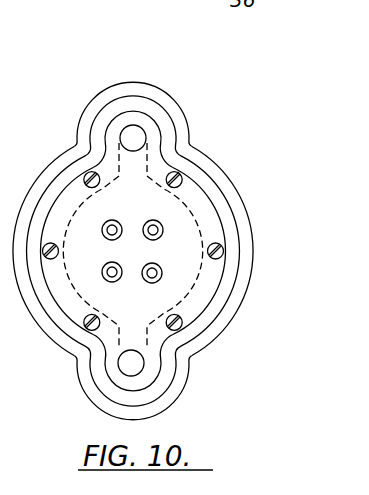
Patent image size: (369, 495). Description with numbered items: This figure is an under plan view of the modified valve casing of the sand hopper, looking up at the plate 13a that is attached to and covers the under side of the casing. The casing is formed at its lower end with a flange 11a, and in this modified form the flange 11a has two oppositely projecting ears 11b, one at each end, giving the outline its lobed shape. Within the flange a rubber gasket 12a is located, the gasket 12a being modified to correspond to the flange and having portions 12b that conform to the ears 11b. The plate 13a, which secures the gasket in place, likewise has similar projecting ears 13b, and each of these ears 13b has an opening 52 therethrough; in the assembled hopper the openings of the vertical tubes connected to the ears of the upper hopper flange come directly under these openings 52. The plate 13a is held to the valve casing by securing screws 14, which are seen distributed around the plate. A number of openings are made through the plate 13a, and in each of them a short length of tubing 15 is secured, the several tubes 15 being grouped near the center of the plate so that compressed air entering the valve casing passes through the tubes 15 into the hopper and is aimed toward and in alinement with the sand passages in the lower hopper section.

The flange 11a is at (252, 242).
The ears 11b is at (128, 88).
The gasket 12a is at (237, 272).
The gasket portions 12b is at (143, 105).
The plate 13a is at (205, 211).
The plate ears 13b is at (150, 122).
The securing screws 14 is at (83, 261).
The tubing 15 is at (120, 237).
The openings 52 is at (135, 147).